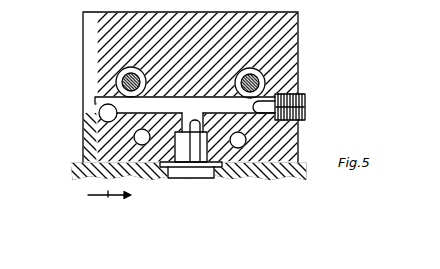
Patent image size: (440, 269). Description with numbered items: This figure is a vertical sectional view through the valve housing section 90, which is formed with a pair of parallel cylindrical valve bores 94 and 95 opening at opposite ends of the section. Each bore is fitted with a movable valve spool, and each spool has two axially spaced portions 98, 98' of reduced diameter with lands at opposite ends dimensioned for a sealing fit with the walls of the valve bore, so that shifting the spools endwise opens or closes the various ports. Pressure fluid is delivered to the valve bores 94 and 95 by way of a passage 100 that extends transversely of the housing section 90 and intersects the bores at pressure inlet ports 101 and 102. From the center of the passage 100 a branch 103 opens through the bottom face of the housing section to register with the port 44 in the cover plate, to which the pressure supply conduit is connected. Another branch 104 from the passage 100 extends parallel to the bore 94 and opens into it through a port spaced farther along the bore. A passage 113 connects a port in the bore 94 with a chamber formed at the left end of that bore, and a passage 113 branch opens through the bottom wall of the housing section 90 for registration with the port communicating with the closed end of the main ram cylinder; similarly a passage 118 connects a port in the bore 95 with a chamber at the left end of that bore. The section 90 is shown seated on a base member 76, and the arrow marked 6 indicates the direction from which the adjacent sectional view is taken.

The housing section 90 is at (92, 30).
The valve bore 94 is at (118, 72).
The portion of reduced diameter 98 is at (91, 83).
The portion of reduced diameter 98' is at (285, 65).
The valve bore 95 is at (268, 84).
The passage 100 is at (282, 100).
The pressure inlet port 102 is at (282, 113).
The pressure inlet port 101 is at (98, 101).
The branch 104 is at (97, 127).
The passage 113 is at (135, 139).
The passage 118 is at (245, 141).
The branch 103 is at (190, 179).
The port 44 is at (207, 171).
The base plate 76 is at (83, 170).
The section line 6 is at (114, 195).